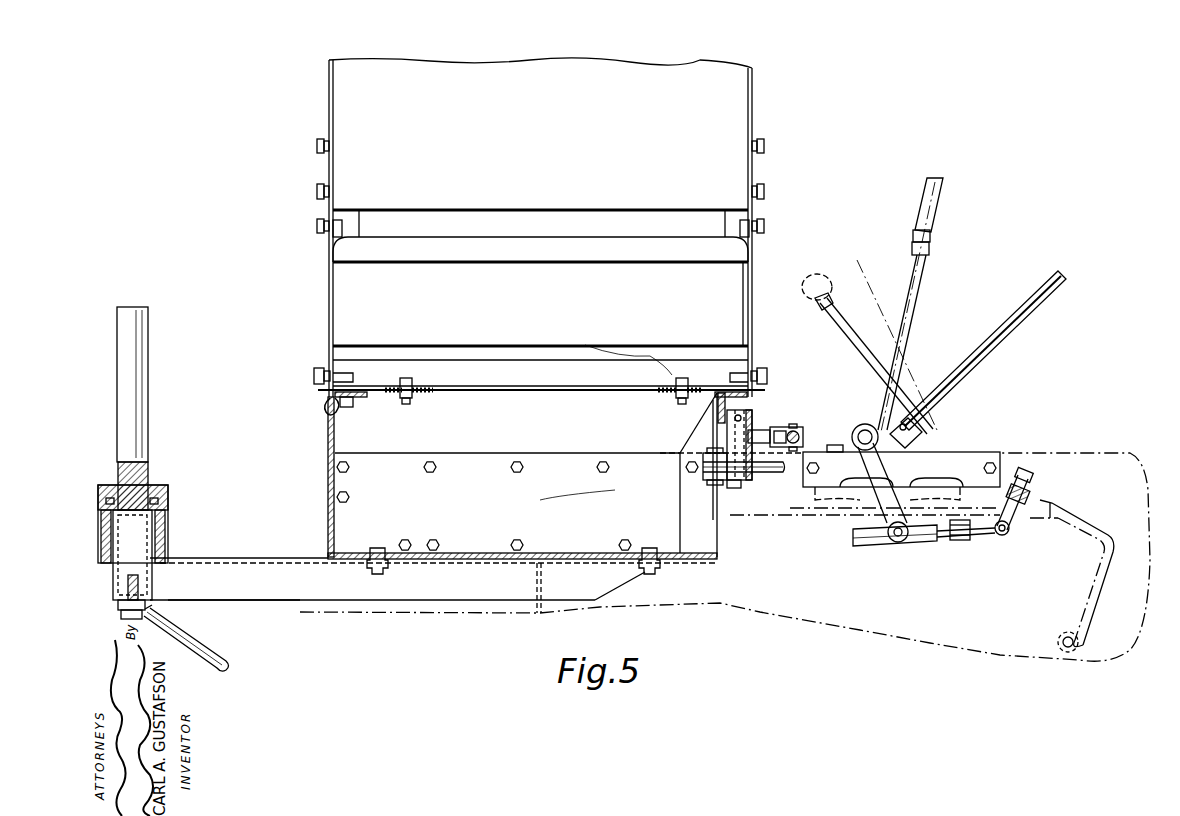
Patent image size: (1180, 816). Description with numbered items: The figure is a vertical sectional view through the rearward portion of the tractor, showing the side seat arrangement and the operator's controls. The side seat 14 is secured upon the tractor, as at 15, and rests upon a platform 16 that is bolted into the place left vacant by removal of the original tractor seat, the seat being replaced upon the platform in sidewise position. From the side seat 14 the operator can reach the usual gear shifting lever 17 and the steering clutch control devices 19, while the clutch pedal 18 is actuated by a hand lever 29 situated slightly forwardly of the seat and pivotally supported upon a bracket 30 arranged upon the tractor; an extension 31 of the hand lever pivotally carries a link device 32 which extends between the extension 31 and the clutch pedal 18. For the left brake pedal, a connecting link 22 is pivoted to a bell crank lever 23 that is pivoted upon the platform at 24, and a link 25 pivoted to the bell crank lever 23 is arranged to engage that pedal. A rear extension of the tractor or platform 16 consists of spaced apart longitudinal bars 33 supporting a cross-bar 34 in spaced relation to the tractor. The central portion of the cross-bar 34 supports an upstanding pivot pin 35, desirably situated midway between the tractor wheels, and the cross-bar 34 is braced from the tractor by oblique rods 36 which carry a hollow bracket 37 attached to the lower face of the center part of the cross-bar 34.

The side seat 14 is at (748, 116).
The securing means 15 is at (316, 376).
The platform 16 is at (340, 406).
The gear shifting lever 17 is at (840, 285).
The clutch pedal 18 is at (1048, 508).
The steering clutch control devices 19 is at (944, 190).
The connecting link 22 is at (802, 436).
The bell crank lever 23 is at (762, 430).
The pivot 24 is at (737, 412).
The link 25 is at (773, 474).
The hand lever 29 is at (998, 330).
The bracket 30 is at (855, 428).
The extension of the hand lever 31 is at (882, 494).
The link device 32 is at (928, 546).
The longitudinal bars 33 is at (228, 566).
The cross-bar 34 is at (168, 525).
The upstanding pivot pin 35 is at (144, 425).
The oblique rods 36 is at (221, 653).
The hollow bracket 37 is at (114, 582).